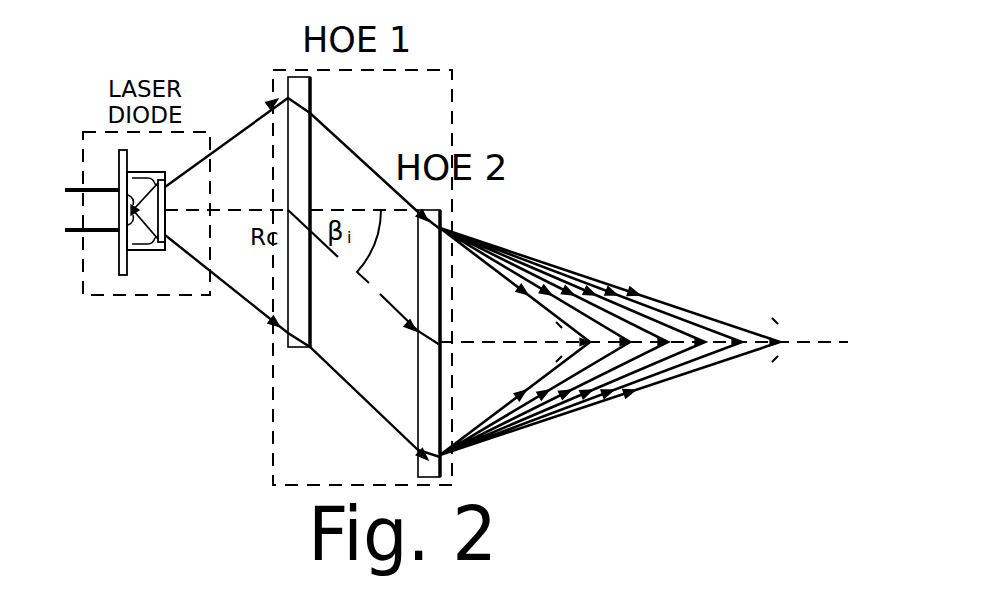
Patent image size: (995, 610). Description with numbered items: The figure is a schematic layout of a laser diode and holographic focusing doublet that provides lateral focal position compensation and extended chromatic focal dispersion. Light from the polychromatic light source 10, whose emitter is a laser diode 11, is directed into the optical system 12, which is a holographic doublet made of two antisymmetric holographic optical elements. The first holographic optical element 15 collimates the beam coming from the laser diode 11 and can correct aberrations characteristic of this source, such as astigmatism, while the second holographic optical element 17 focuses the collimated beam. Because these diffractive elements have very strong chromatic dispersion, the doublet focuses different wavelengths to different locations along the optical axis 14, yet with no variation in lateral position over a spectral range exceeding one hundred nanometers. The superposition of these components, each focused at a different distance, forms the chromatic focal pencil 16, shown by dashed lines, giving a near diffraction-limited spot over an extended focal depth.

The light source 10 is at (165, 295).
The polychromatic laser diode 11 is at (142, 173).
The optical system 12 is at (274, 443).
The optical axis 14 is at (522, 343).
The first holographic optical element 15 is at (298, 348).
The chromatic focal pencil 16 is at (672, 352).
The second holographic optical element 17 is at (419, 468).